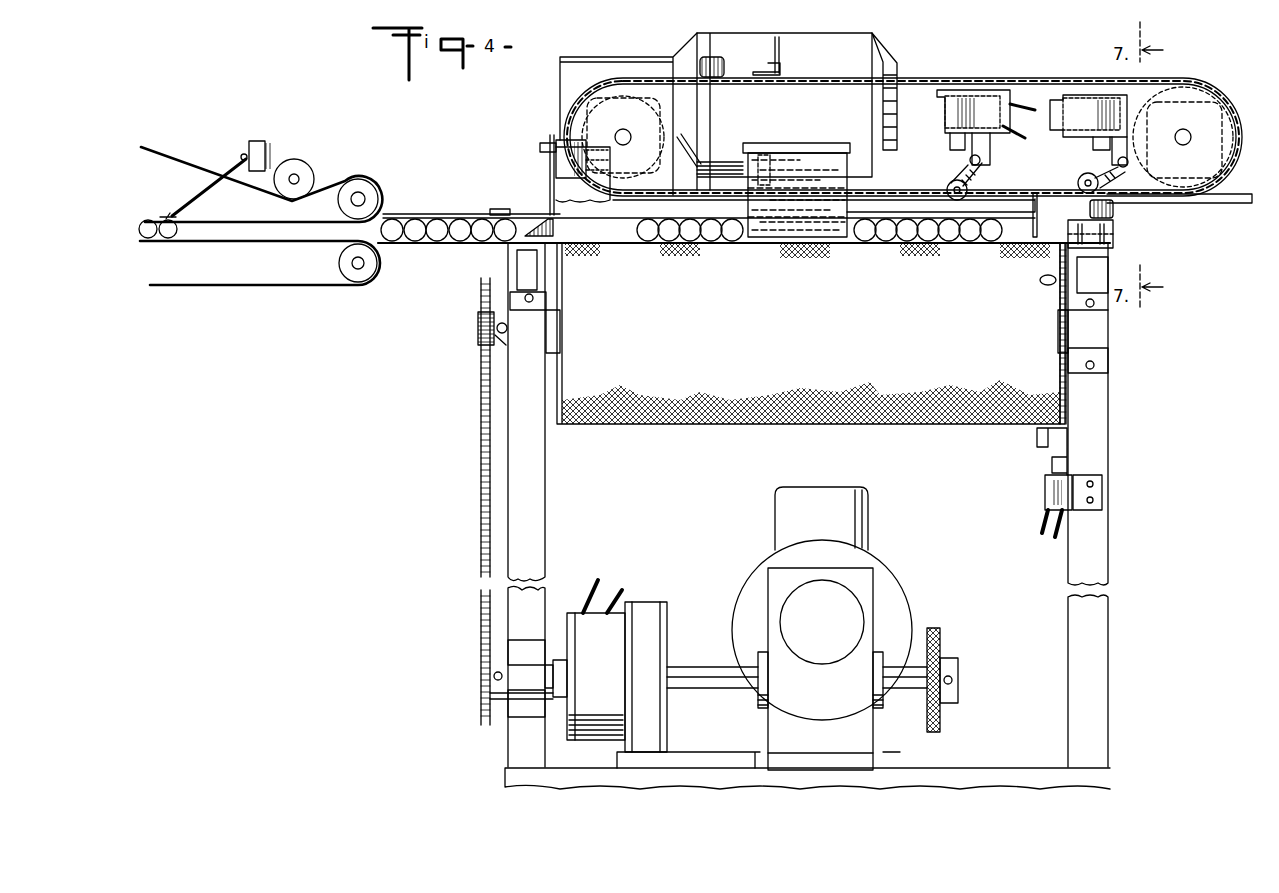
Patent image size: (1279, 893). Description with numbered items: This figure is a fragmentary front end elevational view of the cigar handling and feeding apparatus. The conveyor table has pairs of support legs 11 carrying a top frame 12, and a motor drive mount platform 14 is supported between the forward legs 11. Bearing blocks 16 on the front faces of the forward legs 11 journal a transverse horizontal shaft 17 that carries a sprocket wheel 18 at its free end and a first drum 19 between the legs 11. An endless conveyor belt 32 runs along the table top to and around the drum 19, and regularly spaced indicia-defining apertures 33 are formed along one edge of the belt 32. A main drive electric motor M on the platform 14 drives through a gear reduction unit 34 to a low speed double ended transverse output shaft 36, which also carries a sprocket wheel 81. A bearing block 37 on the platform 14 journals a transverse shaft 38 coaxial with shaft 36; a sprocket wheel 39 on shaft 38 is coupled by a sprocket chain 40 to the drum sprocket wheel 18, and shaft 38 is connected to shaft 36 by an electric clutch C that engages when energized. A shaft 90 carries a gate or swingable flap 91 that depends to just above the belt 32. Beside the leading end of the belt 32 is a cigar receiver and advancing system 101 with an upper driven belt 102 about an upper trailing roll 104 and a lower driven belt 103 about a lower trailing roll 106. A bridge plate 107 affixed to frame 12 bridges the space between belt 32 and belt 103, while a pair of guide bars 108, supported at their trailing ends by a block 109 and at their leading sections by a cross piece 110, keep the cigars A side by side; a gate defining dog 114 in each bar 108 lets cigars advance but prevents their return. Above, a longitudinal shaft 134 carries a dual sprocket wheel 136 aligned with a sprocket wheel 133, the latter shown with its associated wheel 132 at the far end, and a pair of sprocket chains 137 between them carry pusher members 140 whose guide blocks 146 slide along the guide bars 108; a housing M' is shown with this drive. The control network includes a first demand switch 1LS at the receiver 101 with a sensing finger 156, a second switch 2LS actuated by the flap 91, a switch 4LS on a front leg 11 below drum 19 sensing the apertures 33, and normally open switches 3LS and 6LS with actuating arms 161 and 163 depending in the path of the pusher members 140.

The first demand switch 1LS is at (268, 124).
The second switch 2LS is at (560, 165).
The normally open switch 3LS is at (1085, 105).
The switch 4LS is at (1045, 493).
The normally open switch 6LS is at (966, 100).
The cigar A is at (150, 236).
The electric clutch C is at (600, 732).
The main drive electric motor M is at (828, 603).
The motor housing M' is at (790, 103).
The support legs 11 is at (535, 526).
The top frame 12 is at (520, 264).
The motor drive mount platform 14 is at (988, 754).
The bearing blocks 16 is at (486, 318).
The transverse horizontal shaft 17 is at (553, 336).
The sprocket wheel 18 is at (490, 346).
The first drum 19 is at (1065, 400).
The endless conveyor belt 32 is at (980, 428).
The indicia-defining apertures 33 is at (1040, 283).
The gear reduction unit 34 is at (855, 740).
The low speed double ended transverse output shaft 36 is at (692, 668).
The bearing block 37 is at (523, 702).
The transverse shaft 38 is at (548, 678).
The sprocket wheel 39 is at (494, 664).
The sprocket chain 40 is at (482, 593).
The sprocket wheel 81 is at (950, 666).
The shaft 90 is at (800, 147).
The gate or swingable flap 91 is at (770, 165).
The cigar receiver and advancing system 101 is at (330, 150).
The upper driven endless belt 102 is at (332, 184).
The lower driven endless belt 103 is at (286, 290).
The upper trailing roll 104 is at (395, 182).
The lower trailing roll 106 is at (358, 280).
The bridge plate 107 is at (455, 250).
The guide bars 108 is at (444, 216).
The block 109 is at (1113, 236).
The cross piece 110 is at (497, 208).
The gate defining dog 114 is at (530, 218).
The sprocket 132 is at (1198, 124).
The sprocket wheel 133 is at (1228, 130).
The longitudinal shaft 134 is at (636, 120).
The dual sprocket wheel 136 is at (620, 92).
The sprocket chains 137 is at (930, 68).
The pusher members 140 is at (788, 50).
The guide blocks 146 is at (722, 58).
The sensing finger 156 is at (194, 202).
The actuating arm 161 is at (1085, 173).
The actuating arm 163 is at (960, 176).